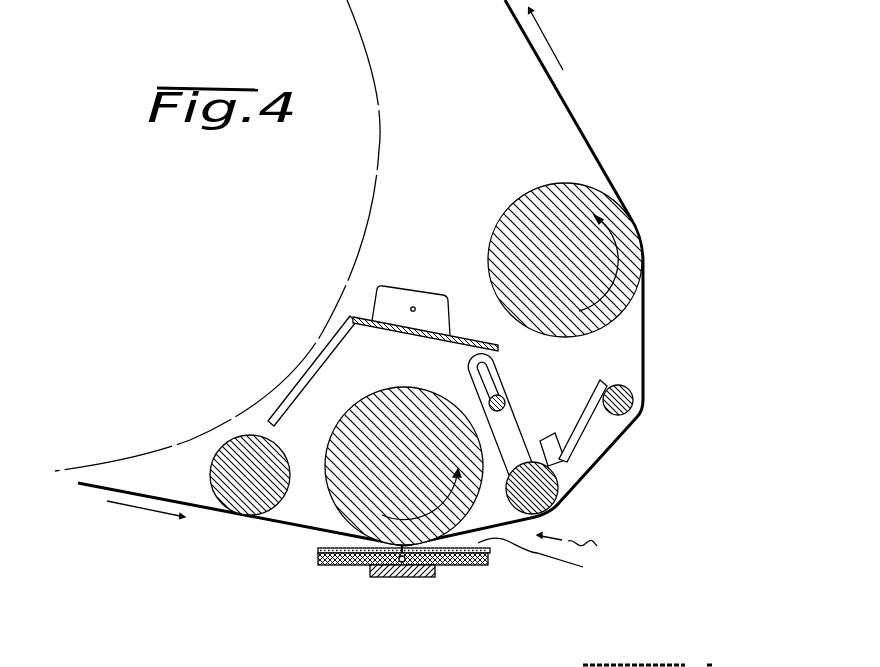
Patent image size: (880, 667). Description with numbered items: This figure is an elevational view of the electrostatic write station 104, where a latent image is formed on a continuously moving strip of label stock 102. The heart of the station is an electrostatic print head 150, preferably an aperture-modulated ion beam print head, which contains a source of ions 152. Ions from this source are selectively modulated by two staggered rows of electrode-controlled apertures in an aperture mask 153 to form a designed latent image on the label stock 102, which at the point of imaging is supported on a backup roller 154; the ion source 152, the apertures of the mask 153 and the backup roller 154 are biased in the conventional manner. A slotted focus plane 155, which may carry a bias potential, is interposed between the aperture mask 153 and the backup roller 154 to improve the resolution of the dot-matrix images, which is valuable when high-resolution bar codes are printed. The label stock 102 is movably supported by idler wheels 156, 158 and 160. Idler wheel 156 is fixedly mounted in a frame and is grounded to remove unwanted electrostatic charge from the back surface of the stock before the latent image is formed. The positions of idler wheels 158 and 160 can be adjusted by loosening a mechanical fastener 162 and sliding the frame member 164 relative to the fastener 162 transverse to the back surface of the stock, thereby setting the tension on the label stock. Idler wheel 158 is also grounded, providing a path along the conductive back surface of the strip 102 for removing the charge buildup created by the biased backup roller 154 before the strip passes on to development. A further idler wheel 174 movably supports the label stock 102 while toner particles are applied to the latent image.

The label stock 102 is at (578, 117).
The write station 104 is at (597, 546).
The electrostatic print head 150 is at (371, 568).
The source of ions 152 is at (402, 562).
The aperture mask 153 is at (497, 556).
The backup roller 154 is at (370, 507).
The slotted focus plane 155 is at (542, 561).
The idler wheel 156 is at (230, 506).
The idler wheel 158 is at (543, 499).
The idler wheel 160 is at (638, 405).
The mechanical fastener 162 is at (595, 395).
The frame member 164 is at (500, 375).
The idler wheel 174 is at (613, 217).